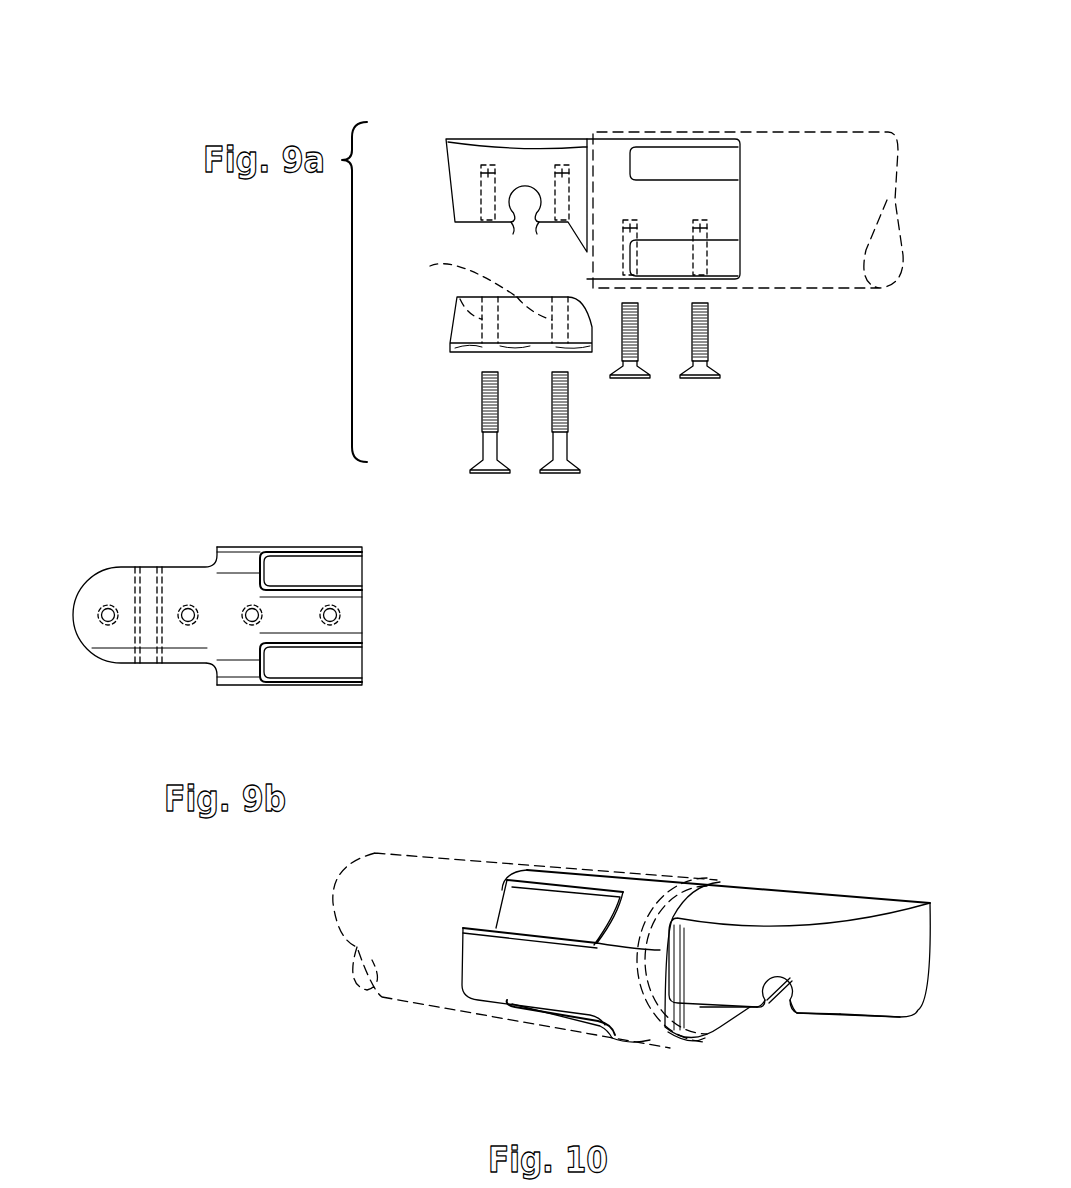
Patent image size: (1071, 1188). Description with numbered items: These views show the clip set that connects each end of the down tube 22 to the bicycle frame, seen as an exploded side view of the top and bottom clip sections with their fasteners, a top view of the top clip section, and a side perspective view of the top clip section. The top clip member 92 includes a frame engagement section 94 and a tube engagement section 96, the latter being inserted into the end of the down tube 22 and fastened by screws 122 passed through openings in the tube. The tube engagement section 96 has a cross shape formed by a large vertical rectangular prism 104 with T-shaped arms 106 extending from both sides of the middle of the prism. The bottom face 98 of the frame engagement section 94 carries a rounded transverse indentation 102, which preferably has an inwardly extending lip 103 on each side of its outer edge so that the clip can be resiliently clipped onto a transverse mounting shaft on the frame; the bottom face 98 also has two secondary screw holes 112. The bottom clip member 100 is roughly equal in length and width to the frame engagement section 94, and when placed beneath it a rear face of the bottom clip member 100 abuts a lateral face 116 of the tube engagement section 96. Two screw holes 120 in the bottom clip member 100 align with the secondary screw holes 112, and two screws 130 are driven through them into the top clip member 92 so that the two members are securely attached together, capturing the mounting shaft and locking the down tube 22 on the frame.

In FIG. 9A, the down tube 22 is at (843, 132).
In FIG. 10, the down tube 22 is at (497, 860).
In FIG. 9A, the top clip member 92 is at (548, 118).
In FIG. 9B, the top clip member 92 is at (134, 553).
In FIG. 10, the top clip member 92 is at (670, 816).
In FIG. 9A, the frame engagement section 94 is at (508, 139).
In FIG. 9B, the frame engagement section 94 is at (75, 640).
In FIG. 10, the frame engagement section 94 is at (758, 873).
In FIG. 9A, the tube engagement section 96 is at (670, 136).
In FIG. 9B, the tube engagement section 96 is at (217, 693).
In FIG. 10, the tube engagement section 96 is at (590, 865).
In FIG. 10, the bottom face 98 is at (850, 1022).
In FIG. 9A, the bottom clip member 100 is at (592, 355).
In FIG. 9A, the indentation 102 is at (530, 203).
In FIG. 9B, the indentation 102 is at (167, 590).
In FIG. 10, the indentation 102 is at (780, 997).
In FIG. 9A, the lip 103 is at (540, 226).
In FIG. 10, the lip 103 is at (798, 1012).
In FIG. 9A, the vertical rectangular prism 104 is at (718, 143).
In FIG. 9B, the vertical rectangular prism 104 is at (358, 621).
In FIG. 10, the vertical rectangular prism 104 is at (505, 915).
In FIG. 9A, the T-shaped arms 106 is at (720, 228).
In FIG. 9B, the T-shaped arms 106 is at (322, 685).
In FIG. 10, the T-shaped arms 106 is at (467, 968).
In FIG. 10, the secondary screw holes 112 is at (822, 1022).
In FIG. 10, the lateral face 116 is at (703, 1040).
In FIG. 9A, the screw holes 120 is at (445, 265).
In FIG. 9A, the screws 122 is at (632, 377).
In FIG. 9A, the screws 130 is at (492, 473).